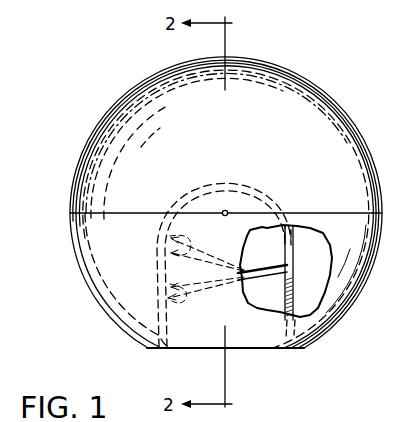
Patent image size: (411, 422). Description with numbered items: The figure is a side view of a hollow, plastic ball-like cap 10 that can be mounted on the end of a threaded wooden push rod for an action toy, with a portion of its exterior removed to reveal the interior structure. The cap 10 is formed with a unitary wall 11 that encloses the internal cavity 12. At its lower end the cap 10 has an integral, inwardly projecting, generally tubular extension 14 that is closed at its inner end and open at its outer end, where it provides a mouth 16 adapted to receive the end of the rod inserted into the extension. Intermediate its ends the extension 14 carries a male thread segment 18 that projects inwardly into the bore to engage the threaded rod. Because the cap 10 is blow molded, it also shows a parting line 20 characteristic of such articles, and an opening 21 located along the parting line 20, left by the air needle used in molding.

The ball-like cap 10 is at (331, 61).
The unitary wall 11 is at (342, 110).
The internal cavity 12 is at (326, 145).
The tubular extension 14 is at (293, 247).
The mouth 16 is at (259, 324).
The male thread segment 18 is at (203, 292).
The parting line 20 is at (139, 212).
The opening 21 is at (227, 211).